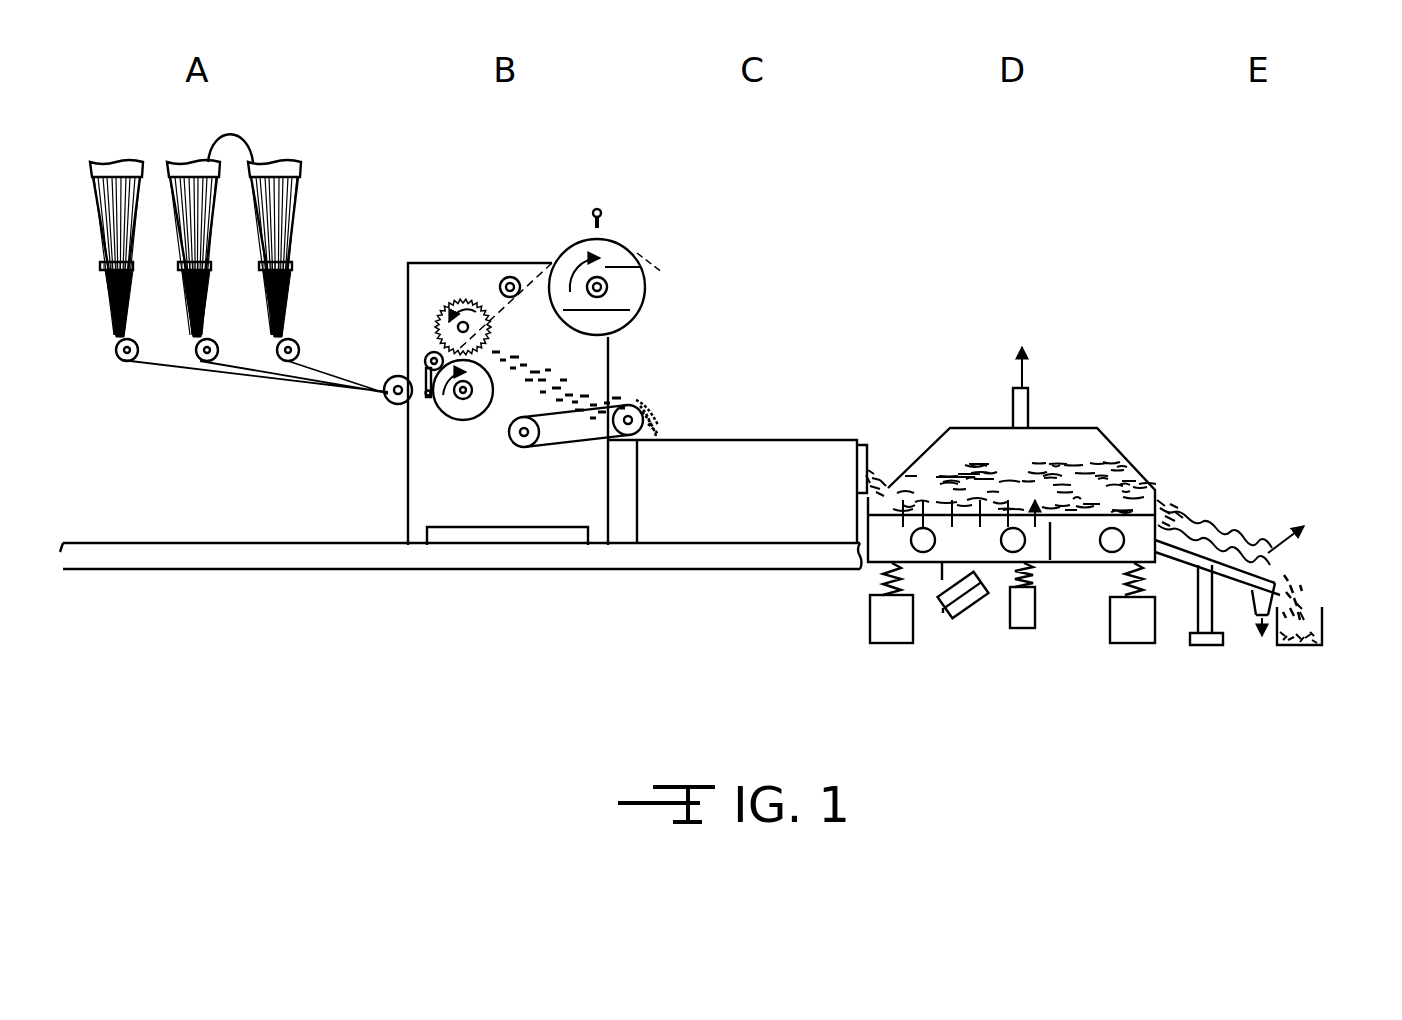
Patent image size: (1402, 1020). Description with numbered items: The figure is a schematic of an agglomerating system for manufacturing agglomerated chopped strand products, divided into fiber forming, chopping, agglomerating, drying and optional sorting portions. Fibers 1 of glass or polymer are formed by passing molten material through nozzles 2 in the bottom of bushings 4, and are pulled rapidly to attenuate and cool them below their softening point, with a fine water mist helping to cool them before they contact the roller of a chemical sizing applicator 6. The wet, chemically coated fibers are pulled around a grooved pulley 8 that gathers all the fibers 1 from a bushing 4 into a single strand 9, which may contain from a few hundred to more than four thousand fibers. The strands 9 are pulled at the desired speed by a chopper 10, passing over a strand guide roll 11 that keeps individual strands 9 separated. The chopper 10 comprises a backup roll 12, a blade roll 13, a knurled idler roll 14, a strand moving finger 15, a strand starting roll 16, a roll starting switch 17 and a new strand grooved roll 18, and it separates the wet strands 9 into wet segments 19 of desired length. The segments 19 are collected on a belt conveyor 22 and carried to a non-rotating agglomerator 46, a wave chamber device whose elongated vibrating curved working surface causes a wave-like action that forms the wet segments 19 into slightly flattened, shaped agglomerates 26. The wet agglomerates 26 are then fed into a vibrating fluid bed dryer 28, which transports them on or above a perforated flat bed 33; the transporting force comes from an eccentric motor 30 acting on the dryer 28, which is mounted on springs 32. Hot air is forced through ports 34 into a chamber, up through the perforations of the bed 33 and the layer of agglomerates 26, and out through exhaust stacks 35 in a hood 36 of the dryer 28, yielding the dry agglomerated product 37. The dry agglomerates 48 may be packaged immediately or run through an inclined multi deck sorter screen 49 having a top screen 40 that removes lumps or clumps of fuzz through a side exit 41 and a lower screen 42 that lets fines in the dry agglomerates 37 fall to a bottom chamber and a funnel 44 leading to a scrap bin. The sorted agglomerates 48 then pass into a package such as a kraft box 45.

The fibers 1 is at (100, 203).
The nozzles 2 is at (97, 167).
The bushings 4 is at (230, 133).
The size applicator 6 is at (258, 265).
The grooved pulley 8 is at (190, 355).
The strand 9 is at (220, 398).
The chopper 10 is at (430, 258).
The strand guide roll 11 is at (393, 383).
The backup roll 12 is at (458, 413).
The blade roll 13 is at (483, 328).
The knurled idler roll 14 is at (430, 352).
The strand moving finger 15 is at (428, 392).
The strand starting roll 16 is at (617, 253).
The roll starting switch 17 is at (600, 209).
The new strand grooved roll 18 is at (507, 278).
The wet segments 19 is at (547, 372).
The belt conveyor 22 is at (587, 423).
The agglomerates 26 is at (877, 490).
The vibrating fluid bed dryer 28 is at (1093, 423).
The eccentric motor 30 is at (943, 613).
The springs 32 is at (1127, 572).
The perforated flat bed 33 is at (1052, 562).
The ports 34 is at (923, 562).
The exhaust stacks 35 is at (1028, 390).
The hood 36 is at (962, 427).
The dry agglomerated product 37 is at (1174, 500).
The top screen 40 is at (1247, 547).
The side exit 41 is at (1303, 522).
The lower screen 42 is at (1283, 571).
The funnel 44 is at (1247, 593).
The kraft box 45 is at (1322, 627).
The agglomerator 46 is at (738, 434).
The dry agglomerates 48 is at (1303, 603).
The inclined multi deck sorter screen 49 is at (1193, 562).